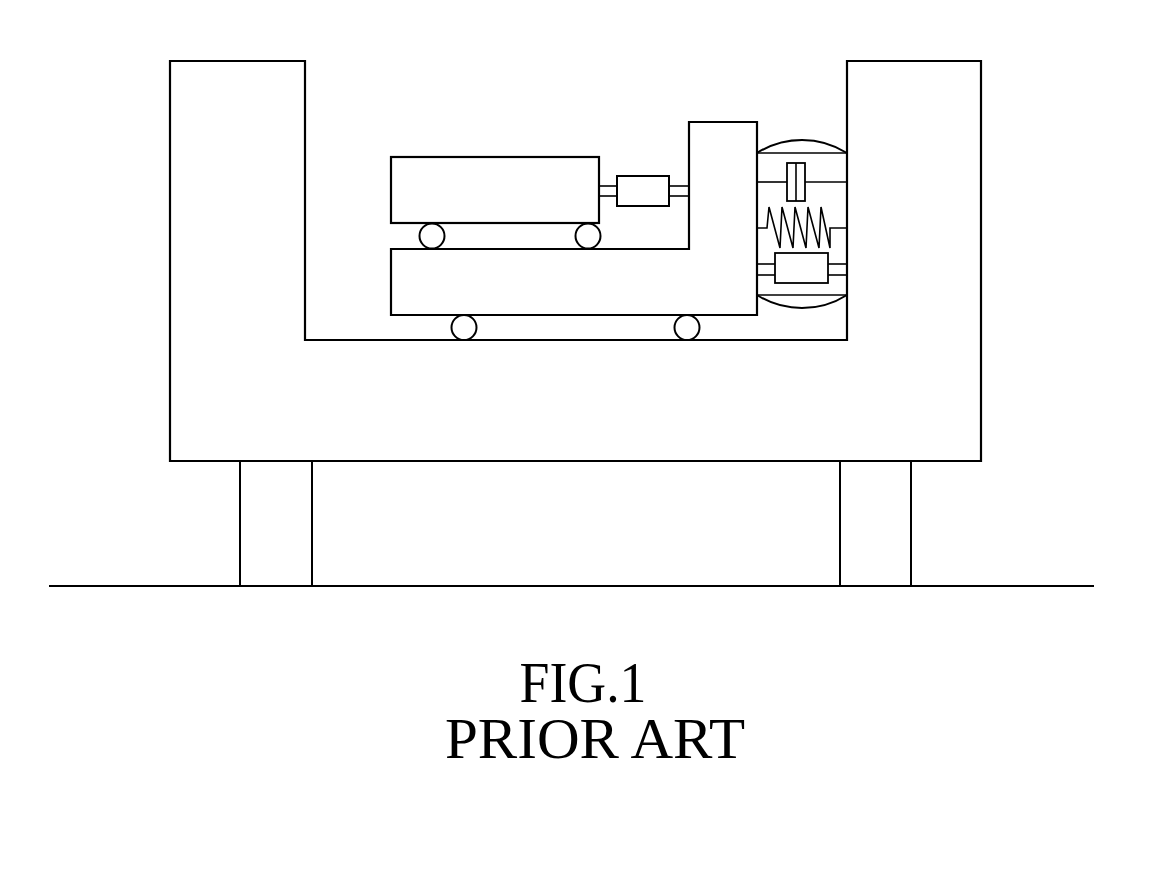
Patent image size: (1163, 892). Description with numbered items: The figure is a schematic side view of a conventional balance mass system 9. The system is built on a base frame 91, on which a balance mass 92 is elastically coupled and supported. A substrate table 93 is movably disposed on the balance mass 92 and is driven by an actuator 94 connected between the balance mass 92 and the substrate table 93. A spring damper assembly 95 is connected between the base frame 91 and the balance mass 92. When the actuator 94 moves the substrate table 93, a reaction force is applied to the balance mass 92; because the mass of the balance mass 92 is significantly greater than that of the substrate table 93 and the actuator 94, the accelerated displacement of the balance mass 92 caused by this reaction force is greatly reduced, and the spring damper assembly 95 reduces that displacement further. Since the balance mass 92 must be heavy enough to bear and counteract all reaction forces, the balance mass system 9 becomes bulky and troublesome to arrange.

The balance mass system 9 is at (997, 97).
The base frame 91 is at (963, 230).
The balance mass 92 is at (398, 281).
The substrate table 93 is at (510, 162).
The actuator 94 is at (640, 177).
The spring damper assembly 95 is at (798, 122).